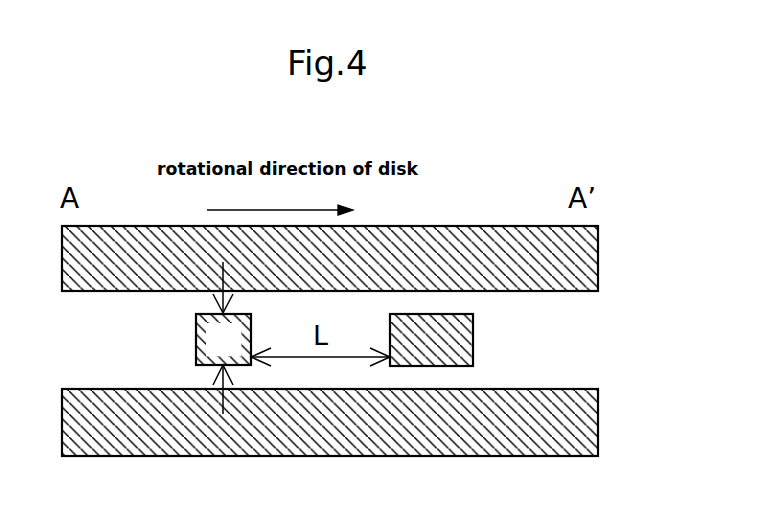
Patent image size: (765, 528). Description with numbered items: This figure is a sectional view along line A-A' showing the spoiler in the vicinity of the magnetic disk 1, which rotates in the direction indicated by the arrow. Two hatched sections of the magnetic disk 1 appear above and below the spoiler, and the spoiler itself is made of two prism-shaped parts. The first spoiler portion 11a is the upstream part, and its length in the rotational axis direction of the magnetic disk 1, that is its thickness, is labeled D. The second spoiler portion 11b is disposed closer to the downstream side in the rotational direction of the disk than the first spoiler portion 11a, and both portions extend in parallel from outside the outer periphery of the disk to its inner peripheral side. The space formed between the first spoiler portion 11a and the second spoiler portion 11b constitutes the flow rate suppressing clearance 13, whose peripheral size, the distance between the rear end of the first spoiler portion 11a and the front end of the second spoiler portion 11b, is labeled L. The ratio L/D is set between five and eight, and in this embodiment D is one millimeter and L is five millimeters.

The magnetic disk 1 is at (555, 265).
The first spoiler portion 11a is at (196, 333).
The second spoiler portion 11b is at (433, 352).
The flow rate suppressing clearance 13 is at (349, 333).